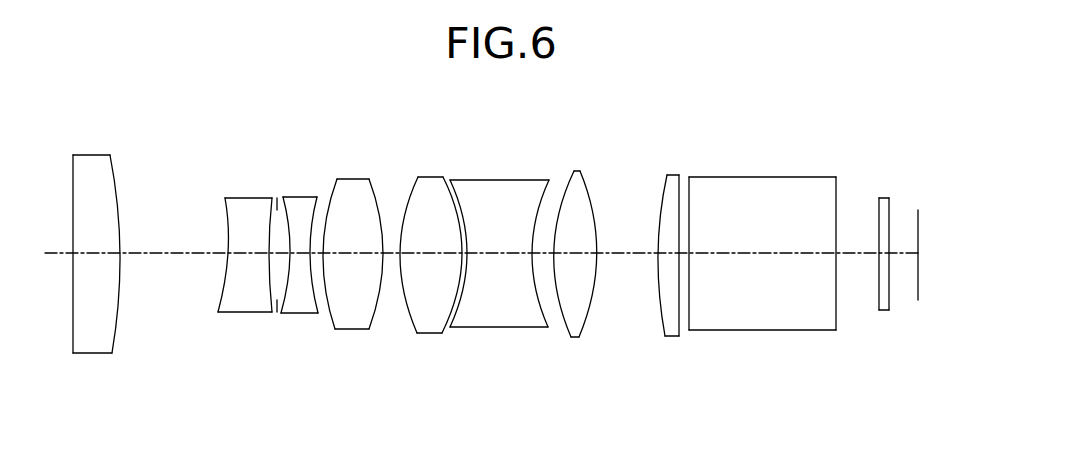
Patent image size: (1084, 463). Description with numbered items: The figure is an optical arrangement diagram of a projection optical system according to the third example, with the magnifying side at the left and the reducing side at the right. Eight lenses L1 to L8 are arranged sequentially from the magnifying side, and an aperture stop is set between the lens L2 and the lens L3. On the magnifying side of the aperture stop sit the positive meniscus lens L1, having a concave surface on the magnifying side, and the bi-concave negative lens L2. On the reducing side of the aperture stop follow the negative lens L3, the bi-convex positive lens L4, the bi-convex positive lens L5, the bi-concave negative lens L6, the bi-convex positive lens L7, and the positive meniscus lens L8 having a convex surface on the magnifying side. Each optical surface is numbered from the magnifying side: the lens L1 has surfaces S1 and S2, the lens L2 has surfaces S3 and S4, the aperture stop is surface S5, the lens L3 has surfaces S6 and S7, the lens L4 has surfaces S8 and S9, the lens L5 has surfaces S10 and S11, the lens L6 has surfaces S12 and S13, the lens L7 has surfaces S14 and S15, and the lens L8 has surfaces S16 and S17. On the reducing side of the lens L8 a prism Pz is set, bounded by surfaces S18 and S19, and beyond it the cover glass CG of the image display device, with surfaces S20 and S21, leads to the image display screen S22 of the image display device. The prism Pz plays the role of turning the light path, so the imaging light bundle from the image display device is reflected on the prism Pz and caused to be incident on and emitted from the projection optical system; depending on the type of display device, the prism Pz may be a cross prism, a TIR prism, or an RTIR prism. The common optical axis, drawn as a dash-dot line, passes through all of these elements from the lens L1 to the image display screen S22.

The first lens L1 is at (99, 170).
The second lens L2 is at (237, 218).
The third lens L3 is at (303, 203).
The fourth lens L4 is at (357, 190).
The fifth lens L5 is at (430, 188).
The sixth lens L6 is at (498, 193).
The seventh lens L7 is at (577, 180).
The eighth lens L8 is at (673, 187).
The prism Pz is at (763, 197).
The cover glass CG is at (885, 205).
The first surface S1 is at (66, 279).
The second surface S2 is at (110, 279).
The third surface S3 is at (204, 289).
The fourth surface S4 is at (246, 289).
The fifth surface S5 is at (277, 240).
The sixth surface S6 is at (271, 289).
The seventh surface S7 is at (302, 289).
The eighth surface S8 is at (317, 302).
The ninth surface S9 is at (359, 302).
The tenth surface S10 is at (392, 301).
The eleventh surface S11 is at (436, 301).
The twelfth surface S12 is at (470, 303).
The thirteenth surface S13 is at (526, 303).
The fourteenth surface S14 is at (568, 298).
The fifteenth surface S15 is at (602, 298).
The sixteenth surface S16 is at (655, 300).
The seventeenth surface S17 is at (698, 300).
The eighteenth surface S18 is at (718, 282).
The nineteenth surface S19 is at (807, 282).
The twentieth surface S20 is at (861, 293).
The twenty-first surface S21 is at (907, 300).
The image display surface S22 is at (939, 296).